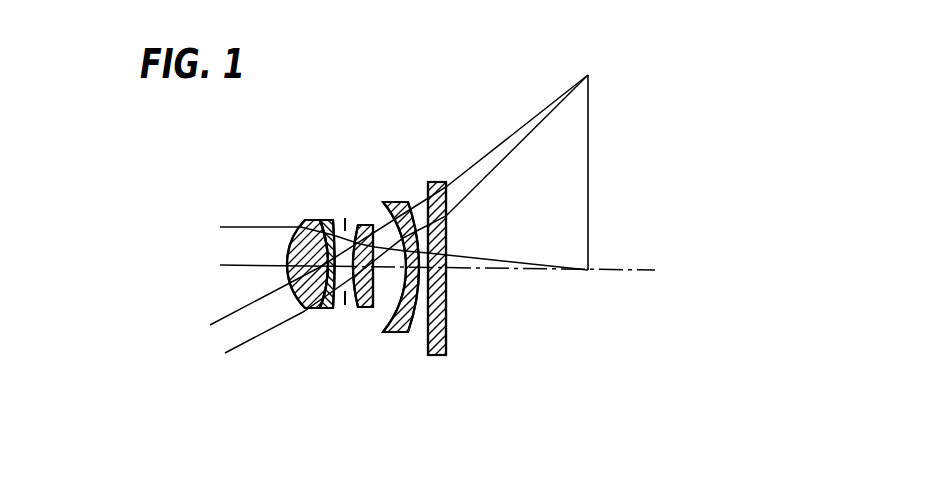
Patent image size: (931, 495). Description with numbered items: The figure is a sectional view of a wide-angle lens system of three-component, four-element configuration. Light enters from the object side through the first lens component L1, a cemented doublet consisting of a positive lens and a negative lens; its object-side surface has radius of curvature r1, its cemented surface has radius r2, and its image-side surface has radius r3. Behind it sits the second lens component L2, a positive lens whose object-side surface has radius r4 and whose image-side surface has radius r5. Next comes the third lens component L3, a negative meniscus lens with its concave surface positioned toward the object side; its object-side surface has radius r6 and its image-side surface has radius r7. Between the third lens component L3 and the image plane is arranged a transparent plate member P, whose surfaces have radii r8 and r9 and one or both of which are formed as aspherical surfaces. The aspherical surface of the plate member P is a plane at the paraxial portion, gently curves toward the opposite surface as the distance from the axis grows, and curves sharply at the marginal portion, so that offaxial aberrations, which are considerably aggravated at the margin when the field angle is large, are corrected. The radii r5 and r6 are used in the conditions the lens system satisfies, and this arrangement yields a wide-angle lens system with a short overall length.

The first lens component L1 is at (307, 216).
The second lens component L2 is at (365, 224).
The third lens component L3 is at (404, 201).
The transparent plate member P is at (447, 181).
The radius of curvature of the first surface r1 is at (302, 220).
The radius of curvature of the second surface r2 is at (316, 219).
The radius of curvature of the third surface r3 is at (332, 219).
The radius of curvature of the fourth surface r4 is at (358, 224).
The radius of curvature of the fifth surface r5 is at (375, 224).
The radius of curvature of the sixth surface r6 is at (385, 202).
The radius of curvature of the seventh surface r7 is at (410, 202).
The radius of curvature of the eighth surface r8 is at (429, 182).
The radius of curvature of the ninth surface r9 is at (448, 203).